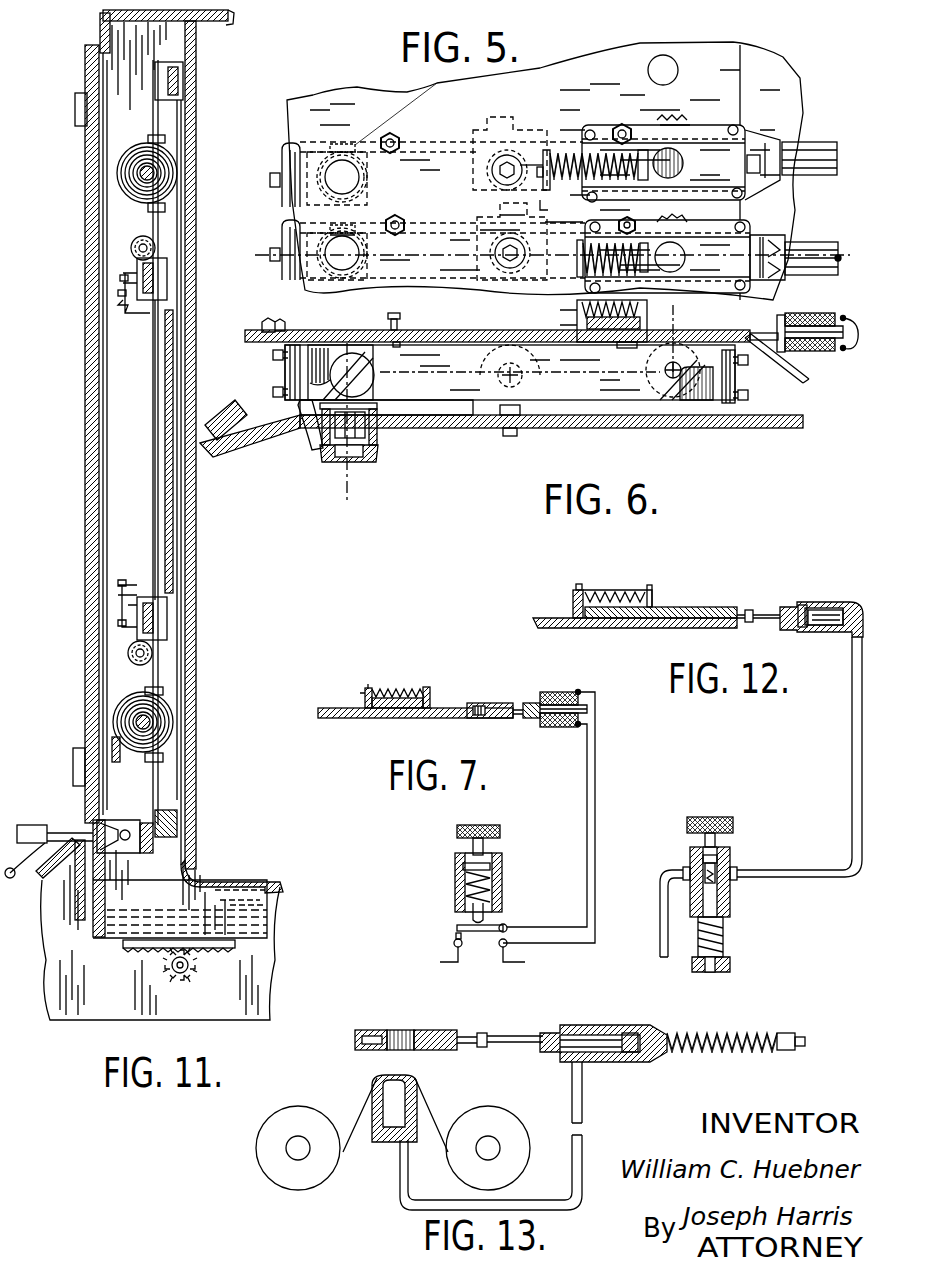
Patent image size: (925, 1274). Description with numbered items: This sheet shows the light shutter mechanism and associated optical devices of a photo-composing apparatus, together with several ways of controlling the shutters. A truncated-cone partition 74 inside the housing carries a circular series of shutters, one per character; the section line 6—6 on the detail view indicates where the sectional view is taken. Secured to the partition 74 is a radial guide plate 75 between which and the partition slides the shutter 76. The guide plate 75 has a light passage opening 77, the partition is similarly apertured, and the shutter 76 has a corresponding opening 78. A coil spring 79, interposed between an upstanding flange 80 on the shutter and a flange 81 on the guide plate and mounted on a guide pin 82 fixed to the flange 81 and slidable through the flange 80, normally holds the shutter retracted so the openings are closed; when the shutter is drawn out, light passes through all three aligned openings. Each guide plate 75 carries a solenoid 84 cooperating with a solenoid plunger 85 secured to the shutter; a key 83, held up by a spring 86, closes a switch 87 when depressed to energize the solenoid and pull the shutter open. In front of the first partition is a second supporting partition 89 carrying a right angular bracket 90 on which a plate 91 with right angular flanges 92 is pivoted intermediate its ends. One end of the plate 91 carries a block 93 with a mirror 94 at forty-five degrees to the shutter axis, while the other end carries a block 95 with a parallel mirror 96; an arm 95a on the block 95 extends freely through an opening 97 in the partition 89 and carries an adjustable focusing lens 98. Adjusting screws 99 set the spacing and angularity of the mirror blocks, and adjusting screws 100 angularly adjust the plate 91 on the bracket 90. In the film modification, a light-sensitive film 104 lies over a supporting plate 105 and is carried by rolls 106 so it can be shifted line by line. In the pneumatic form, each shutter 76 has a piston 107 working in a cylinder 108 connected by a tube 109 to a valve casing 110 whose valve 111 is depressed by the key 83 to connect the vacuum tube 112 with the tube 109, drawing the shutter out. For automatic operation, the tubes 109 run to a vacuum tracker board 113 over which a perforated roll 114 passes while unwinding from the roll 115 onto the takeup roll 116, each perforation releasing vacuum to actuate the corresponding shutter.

In FIG. 5, the section line 6— 6 is at (553, 255).
In FIG. 5, the partition 74 is at (590, 70).
In FIG. 6, the partition 74 is at (457, 332).
In FIG. 13, the partition 74 is at (420, 1050).
In FIG. 5, the guide plate 75 is at (717, 127).
In FIG. 13, the guide plate 75 is at (425, 1031).
In FIG. 5, the shutter 76 is at (576, 190).
In FIG. 6, the shutter 76 is at (788, 352).
In FIG. 7, the shutter 76 is at (483, 707).
In FIG. 12, the shutter 76 is at (741, 610).
In FIG. 13, the shutter 76 is at (452, 1037).
In FIG. 5, the light passage opening 77 is at (687, 168).
In FIG. 5, the light passage opening 78 is at (627, 155).
In FIG. 5, the coil spring 79 is at (560, 148).
In FIG. 12, the coil spring 79 is at (613, 592).
In FIG. 12, the upstanding flange 80 is at (578, 586).
In FIG. 6, the flange 81 is at (673, 313).
In FIG. 12, the flange 81 is at (652, 593).
In FIG. 5, the guide pin 82 is at (560, 222).
In FIG. 12, the guide pin 82 is at (573, 598).
In FIG. 7, the key 83 is at (502, 833).
In FIG. 12, the key 83 is at (735, 823).
In FIG. 6, the solenoid 84 is at (820, 309).
In FIG. 7, the solenoid 84 is at (558, 688).
In FIG. 6, the solenoid plunger 85 is at (850, 318).
In FIG. 7, the solenoid plunger 85 is at (587, 704).
In FIG. 7, the spring 86 is at (503, 883).
In FIG. 7, the switch 87 is at (457, 928).
In FIG. 6, the supporting partition 89 is at (600, 428).
In FIG. 6, the right angular bracket 90 is at (540, 413).
In FIG. 5, the plate 91 is at (418, 224).
In FIG. 6, the plate 91 is at (423, 408).
In FIG. 6, the right angular flanges 92 is at (285, 378).
In FIG. 6, the block 93 is at (687, 397).
In FIG. 6, the mirror 94 is at (650, 377).
In FIG. 6, the block 95 is at (297, 403).
In FIG. 6, the arm 95a is at (315, 435).
In FIG. 6, the mirror 96 is at (373, 362).
In FIG. 6, the opening 97 is at (380, 432).
In FIG. 6, the focusing lens 98 is at (355, 443).
In FIG. 6, the adjusting screws 99 is at (273, 355).
In FIG. 5, the adjusting screws 100 is at (397, 153).
In FIG. 6, the adjusting screws 100 is at (400, 318).
In FIG. 11, the film 104 is at (172, 224).
In FIG. 11, the supporting plate 105 is at (165, 432).
In FIG. 11, the rolls 106 is at (140, 150).
In FIG. 12, the piston 107 is at (801, 604).
In FIG. 13, the piston 107 is at (626, 1033).
In FIG. 12, the cylinder 108 is at (827, 604).
In FIG. 13, the cylinder 108 is at (566, 1025).
In FIG. 12, the tube 109 is at (851, 760).
In FIG. 13, the tube 109 is at (582, 1167).
In FIG. 12, the valve casing 110 is at (731, 858).
In FIG. 12, the valve 111 is at (731, 898).
In FIG. 12, the tube 112 is at (661, 906).
In FIG. 13, the vacuum tracker board 113 is at (372, 1130).
In FIG. 13, the perforated roll 114 is at (365, 1090).
In FIG. 13, the roll 115 is at (258, 1148).
In FIG. 13, the takeup roll 116 is at (508, 1130).